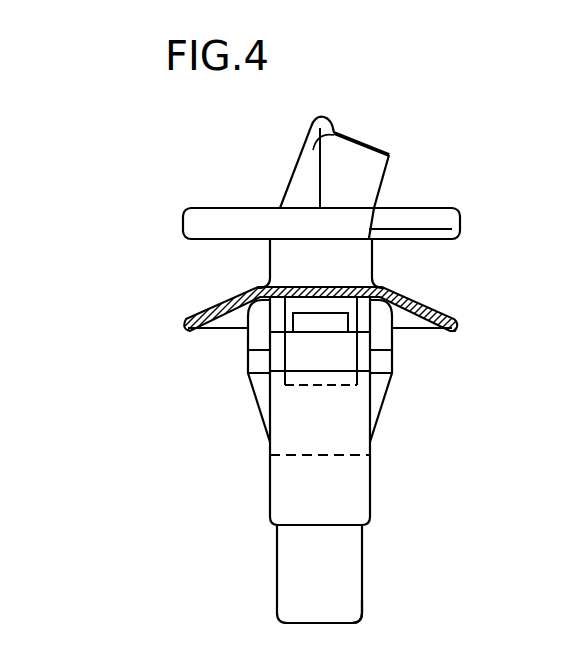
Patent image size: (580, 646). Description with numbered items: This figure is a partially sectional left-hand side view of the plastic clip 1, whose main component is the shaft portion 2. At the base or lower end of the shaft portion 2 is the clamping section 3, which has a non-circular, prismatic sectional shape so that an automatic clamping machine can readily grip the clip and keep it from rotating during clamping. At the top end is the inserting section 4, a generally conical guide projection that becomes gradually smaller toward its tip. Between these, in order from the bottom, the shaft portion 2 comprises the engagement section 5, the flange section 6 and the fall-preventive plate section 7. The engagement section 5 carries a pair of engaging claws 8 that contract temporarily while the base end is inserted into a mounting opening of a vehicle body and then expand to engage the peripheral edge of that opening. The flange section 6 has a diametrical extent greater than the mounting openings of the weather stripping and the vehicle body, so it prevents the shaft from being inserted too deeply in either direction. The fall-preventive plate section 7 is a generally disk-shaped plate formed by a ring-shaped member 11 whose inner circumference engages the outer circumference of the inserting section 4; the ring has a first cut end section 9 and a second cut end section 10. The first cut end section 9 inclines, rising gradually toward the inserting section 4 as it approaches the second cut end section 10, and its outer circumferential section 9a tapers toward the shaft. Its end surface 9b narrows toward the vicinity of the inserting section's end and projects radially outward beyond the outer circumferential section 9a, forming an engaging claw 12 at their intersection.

The plastic clip 1 is at (193, 166).
The shaft portion 2 is at (366, 618).
The clamping section 3 is at (295, 570).
The inserting section 4 is at (304, 150).
The engagement section 5 is at (396, 388).
The flange section 6 is at (430, 309).
The fall-preventive plate section 7 is at (178, 228).
The engaging claws 8 is at (302, 350).
The first cut end section 9 is at (363, 183).
The outer circumferential section 9a is at (377, 195).
The end surface 9b is at (350, 153).
The second cut end section 10 is at (447, 220).
The ring-shaped member 11 is at (210, 232).
The engaging claw 12 is at (390, 154).